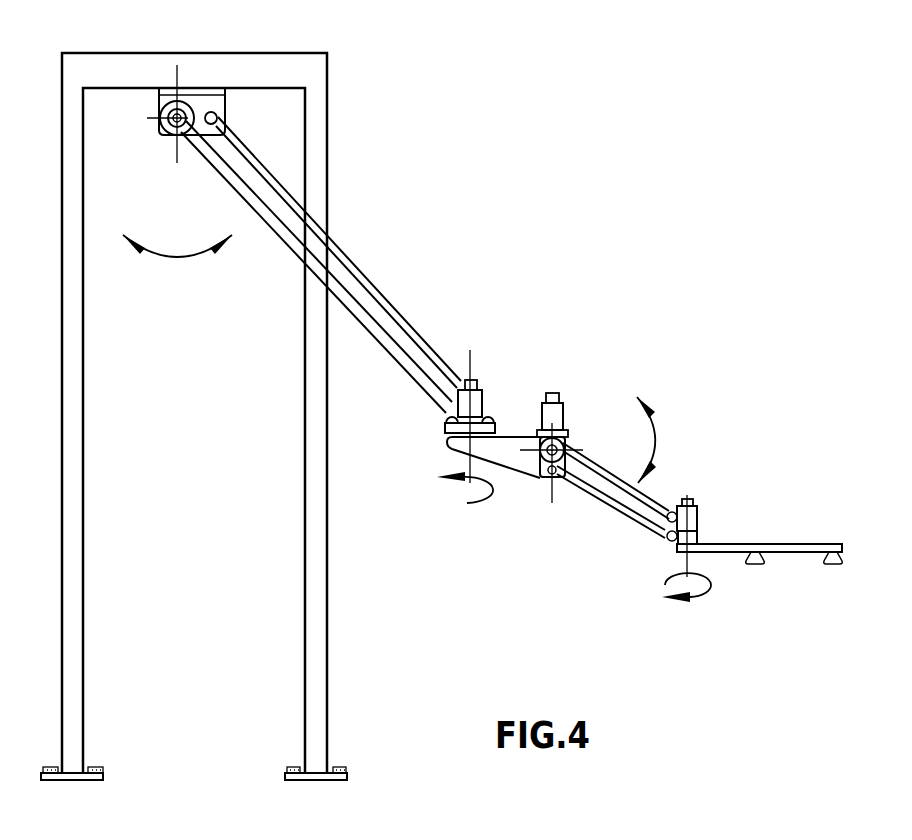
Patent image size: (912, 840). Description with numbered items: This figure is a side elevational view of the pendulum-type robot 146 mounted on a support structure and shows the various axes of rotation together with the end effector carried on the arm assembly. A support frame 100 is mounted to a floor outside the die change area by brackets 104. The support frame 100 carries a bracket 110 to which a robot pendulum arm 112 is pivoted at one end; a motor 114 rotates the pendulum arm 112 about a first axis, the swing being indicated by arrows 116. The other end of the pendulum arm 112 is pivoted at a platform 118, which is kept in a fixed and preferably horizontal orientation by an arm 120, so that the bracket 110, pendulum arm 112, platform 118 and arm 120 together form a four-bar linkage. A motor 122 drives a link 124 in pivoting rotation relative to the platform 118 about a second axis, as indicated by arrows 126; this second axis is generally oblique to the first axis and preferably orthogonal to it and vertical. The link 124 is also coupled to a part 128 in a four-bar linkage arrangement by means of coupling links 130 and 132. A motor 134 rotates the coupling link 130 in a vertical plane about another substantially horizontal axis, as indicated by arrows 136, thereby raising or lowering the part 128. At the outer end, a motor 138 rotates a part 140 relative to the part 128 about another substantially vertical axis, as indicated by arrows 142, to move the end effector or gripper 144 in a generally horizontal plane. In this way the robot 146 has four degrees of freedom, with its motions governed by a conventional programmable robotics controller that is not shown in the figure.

The support frame 100 is at (98, 53).
The brackets 104 is at (102, 772).
The bracket 110 is at (200, 103).
The robot pendulum arm 112 is at (267, 223).
The motor 114 is at (172, 130).
The arrows 116 is at (172, 257).
The platform 118 is at (443, 423).
The arm 120 is at (347, 262).
The motor 122 is at (480, 392).
The link 124 is at (520, 462).
The arrows 126 is at (467, 500).
The part 128 is at (672, 540).
The coupling link 130 is at (652, 495).
The coupling link 132 is at (570, 487).
The motor 134 is at (563, 405).
The arrows 136 is at (650, 432).
The motor 138 is at (695, 502).
The part 140 is at (698, 540).
The arrows 142 is at (707, 590).
The end effector or gripper 144 is at (775, 547).
The robot 146 is at (400, 315).